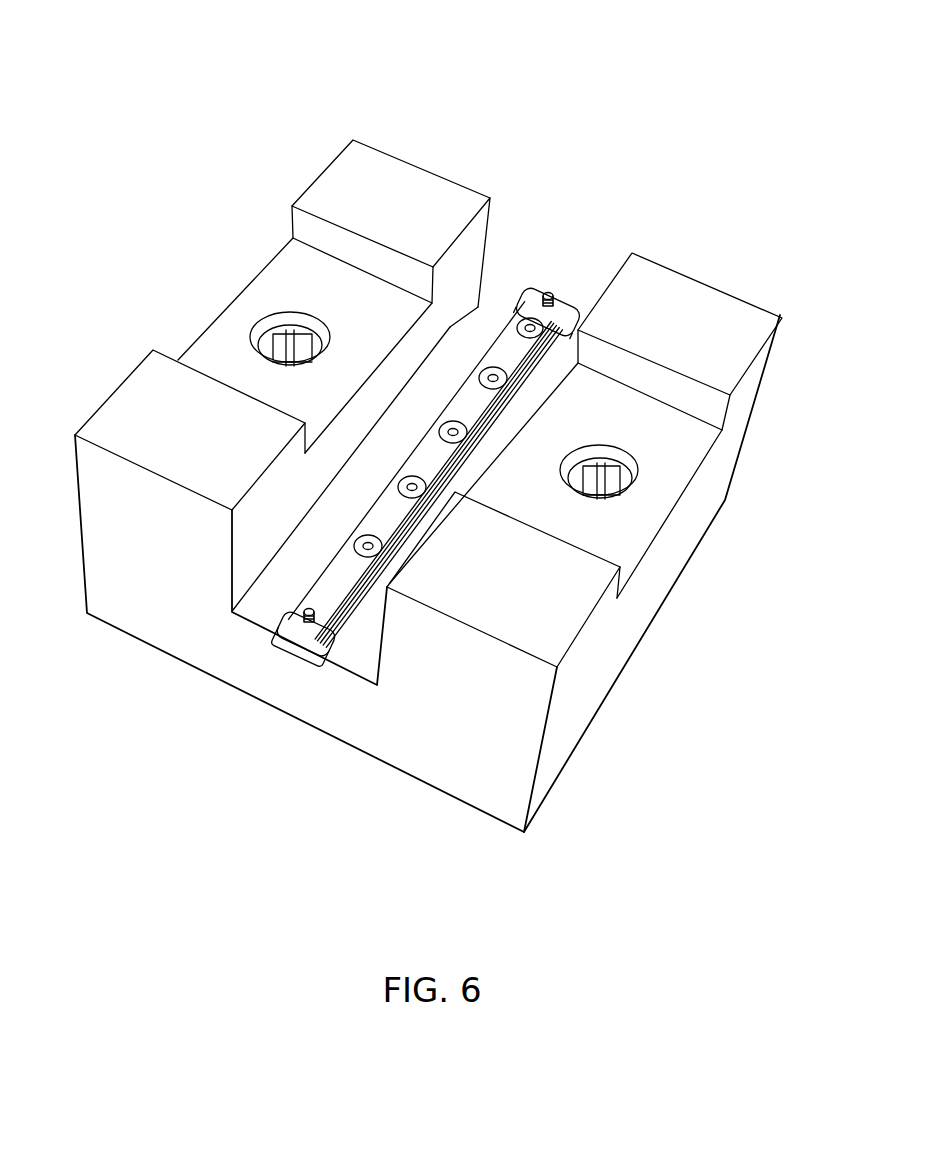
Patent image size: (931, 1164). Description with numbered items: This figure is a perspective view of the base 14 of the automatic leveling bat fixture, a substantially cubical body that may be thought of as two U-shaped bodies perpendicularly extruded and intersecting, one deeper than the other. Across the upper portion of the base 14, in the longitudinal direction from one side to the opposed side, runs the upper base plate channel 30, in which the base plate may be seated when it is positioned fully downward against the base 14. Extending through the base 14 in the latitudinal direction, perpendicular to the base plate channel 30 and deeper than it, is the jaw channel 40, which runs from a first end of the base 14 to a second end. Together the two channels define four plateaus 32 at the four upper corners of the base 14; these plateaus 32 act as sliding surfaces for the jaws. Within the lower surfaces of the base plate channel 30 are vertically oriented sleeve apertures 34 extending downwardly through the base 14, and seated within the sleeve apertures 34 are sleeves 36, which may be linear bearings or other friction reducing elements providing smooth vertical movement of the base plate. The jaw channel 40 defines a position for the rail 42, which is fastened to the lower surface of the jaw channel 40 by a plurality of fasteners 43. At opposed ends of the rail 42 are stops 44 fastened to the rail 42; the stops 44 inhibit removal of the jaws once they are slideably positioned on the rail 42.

The base 14 is at (297, 138).
The upper base plate channel 30 is at (633, 547).
The plateaus 32 is at (373, 217).
The sleeve apertures 34 is at (288, 313).
The sleeves 36 is at (277, 333).
The jaw channel 40 is at (266, 598).
The rail 42 is at (512, 350).
The fasteners 43 is at (480, 376).
The stops 44 is at (563, 300).